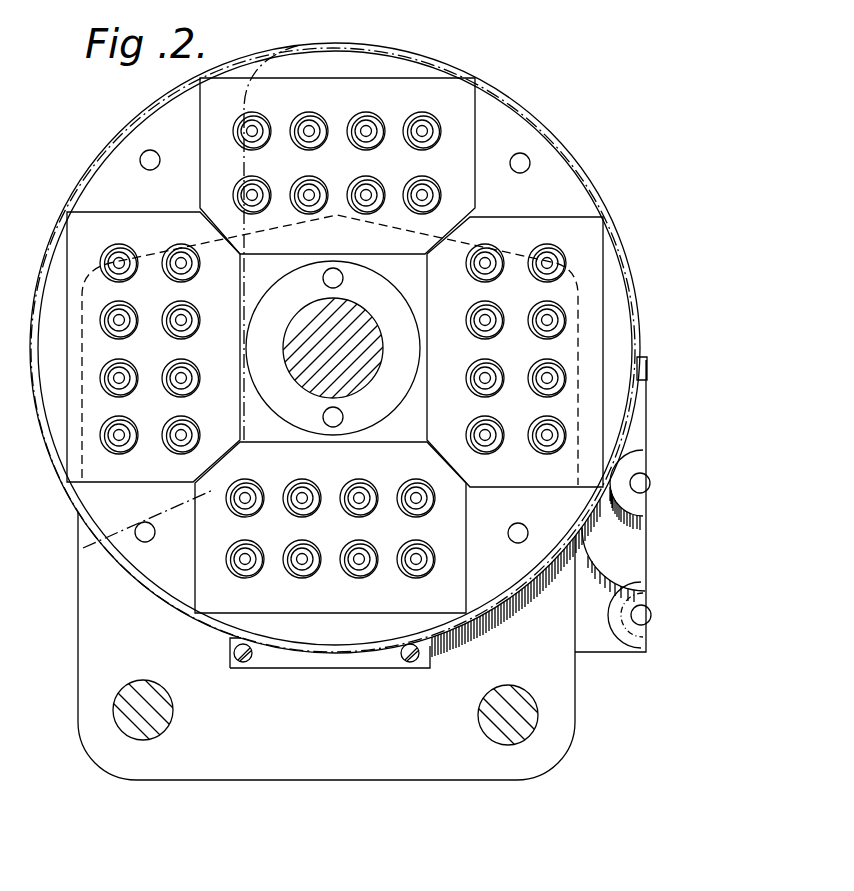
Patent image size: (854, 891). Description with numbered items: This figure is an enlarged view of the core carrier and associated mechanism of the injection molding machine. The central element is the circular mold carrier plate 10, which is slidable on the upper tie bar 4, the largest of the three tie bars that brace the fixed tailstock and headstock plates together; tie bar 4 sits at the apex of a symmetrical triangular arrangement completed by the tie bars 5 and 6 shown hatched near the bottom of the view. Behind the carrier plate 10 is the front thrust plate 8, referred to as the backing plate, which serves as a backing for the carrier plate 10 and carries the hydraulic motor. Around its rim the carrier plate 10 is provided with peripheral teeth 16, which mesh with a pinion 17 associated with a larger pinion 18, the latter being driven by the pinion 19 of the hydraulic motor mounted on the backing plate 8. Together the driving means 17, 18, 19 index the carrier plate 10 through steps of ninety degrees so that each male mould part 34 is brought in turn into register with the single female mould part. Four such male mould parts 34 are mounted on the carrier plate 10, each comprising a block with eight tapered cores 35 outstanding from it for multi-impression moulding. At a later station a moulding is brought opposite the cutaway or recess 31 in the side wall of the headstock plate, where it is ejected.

The tie bar 4 is at (360, 312).
The tie bar 5 is at (480, 712).
The tie bar 6 is at (137, 684).
The front thrust plate 8 is at (333, 772).
The mold carrier plate 10 is at (155, 123).
The peripheral teeth 16 is at (632, 268).
The pinion 17 is at (631, 524).
The larger pinion 18 is at (620, 582).
The pinion of hydraulic motor 19 is at (631, 642).
The cutaway or recess 31 is at (137, 525).
The male mould part 34 is at (462, 127).
The tapered cores 35 is at (357, 119).